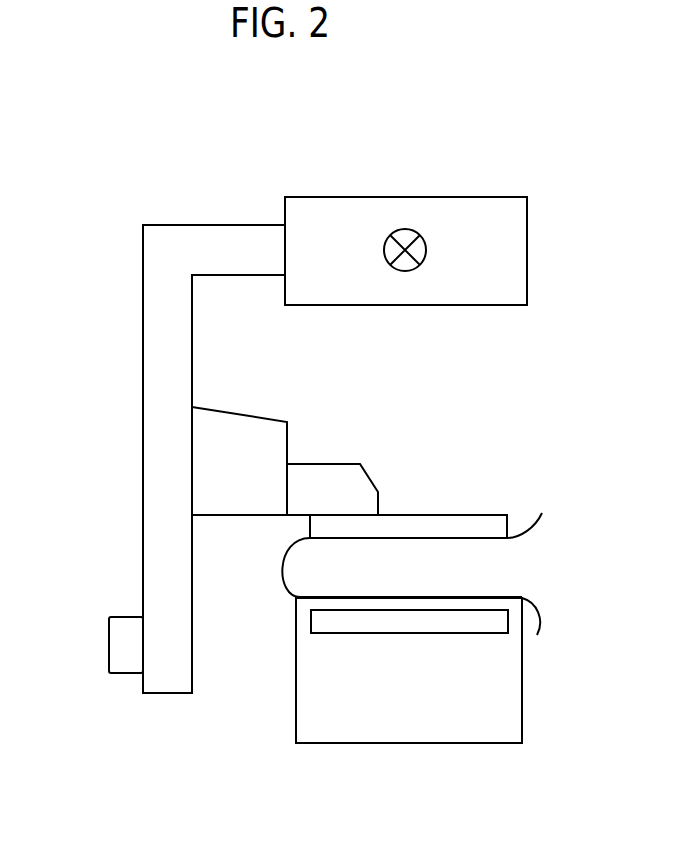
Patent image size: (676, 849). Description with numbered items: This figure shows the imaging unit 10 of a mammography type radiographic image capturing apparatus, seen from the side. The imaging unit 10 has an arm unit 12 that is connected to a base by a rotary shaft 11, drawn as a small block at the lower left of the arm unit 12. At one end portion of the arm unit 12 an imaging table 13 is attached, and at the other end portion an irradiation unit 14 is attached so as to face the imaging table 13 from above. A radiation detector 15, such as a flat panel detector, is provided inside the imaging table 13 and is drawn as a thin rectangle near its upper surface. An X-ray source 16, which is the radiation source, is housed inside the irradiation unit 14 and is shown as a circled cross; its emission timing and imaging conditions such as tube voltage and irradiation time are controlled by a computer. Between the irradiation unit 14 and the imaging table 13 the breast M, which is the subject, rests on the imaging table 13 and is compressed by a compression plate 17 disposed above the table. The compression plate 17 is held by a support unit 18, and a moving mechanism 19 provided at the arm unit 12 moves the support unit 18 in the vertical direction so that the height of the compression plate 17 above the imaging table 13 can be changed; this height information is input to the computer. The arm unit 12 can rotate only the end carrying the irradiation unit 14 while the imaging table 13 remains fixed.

The imaging unit 10 is at (333, 137).
The rotary shaft 11 is at (118, 628).
The arm unit 12 is at (153, 377).
The imaging table 13 is at (337, 733).
The irradiation unit 14 is at (473, 208).
The radiation detector 15 is at (468, 627).
The X-ray source 16 is at (405, 229).
The compression plate 17 is at (478, 522).
The support unit 18 is at (333, 473).
The moving mechanism 19 is at (252, 428).
The breast M is at (300, 555).